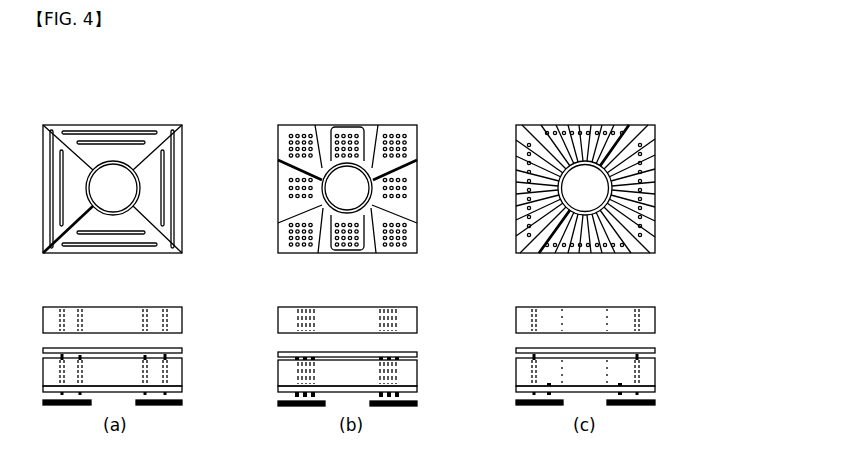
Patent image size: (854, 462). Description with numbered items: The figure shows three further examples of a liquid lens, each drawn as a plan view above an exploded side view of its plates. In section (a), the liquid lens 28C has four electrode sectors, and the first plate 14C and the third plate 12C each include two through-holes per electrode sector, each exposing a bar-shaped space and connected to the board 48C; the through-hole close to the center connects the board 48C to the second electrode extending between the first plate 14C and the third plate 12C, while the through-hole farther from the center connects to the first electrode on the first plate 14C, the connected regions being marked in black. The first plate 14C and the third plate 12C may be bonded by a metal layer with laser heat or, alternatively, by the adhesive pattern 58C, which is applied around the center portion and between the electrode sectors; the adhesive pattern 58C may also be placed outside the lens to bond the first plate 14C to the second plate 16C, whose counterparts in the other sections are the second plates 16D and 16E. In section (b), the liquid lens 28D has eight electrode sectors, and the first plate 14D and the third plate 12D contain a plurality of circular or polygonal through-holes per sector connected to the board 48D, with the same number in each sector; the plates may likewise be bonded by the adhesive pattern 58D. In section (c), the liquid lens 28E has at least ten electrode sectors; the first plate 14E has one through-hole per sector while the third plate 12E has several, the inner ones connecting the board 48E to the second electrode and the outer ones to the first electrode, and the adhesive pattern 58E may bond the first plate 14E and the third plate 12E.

The liquid lens 28C is at (190, 192).
The adhesive pattern 58C is at (47, 262).
The first plate 14C is at (191, 322).
The second plate 16C is at (191, 353).
The third plate 12C is at (191, 390).
The board 48C is at (191, 405).
The liquid lens 28D is at (427, 212).
The adhesive pattern 58D is at (427, 162).
The first plate 14D is at (426, 322).
The adhesive layer 16D is at (426, 353).
The third plate 12D is at (426, 390).
The board 48D is at (426, 405).
The liquid lens 28E is at (664, 193).
The adhesive pattern 58E is at (540, 262).
The first plate 14E is at (664, 322).
The adhesive layer 16E is at (664, 353).
The third plate 12E is at (664, 390).
The board 48E is at (664, 405).